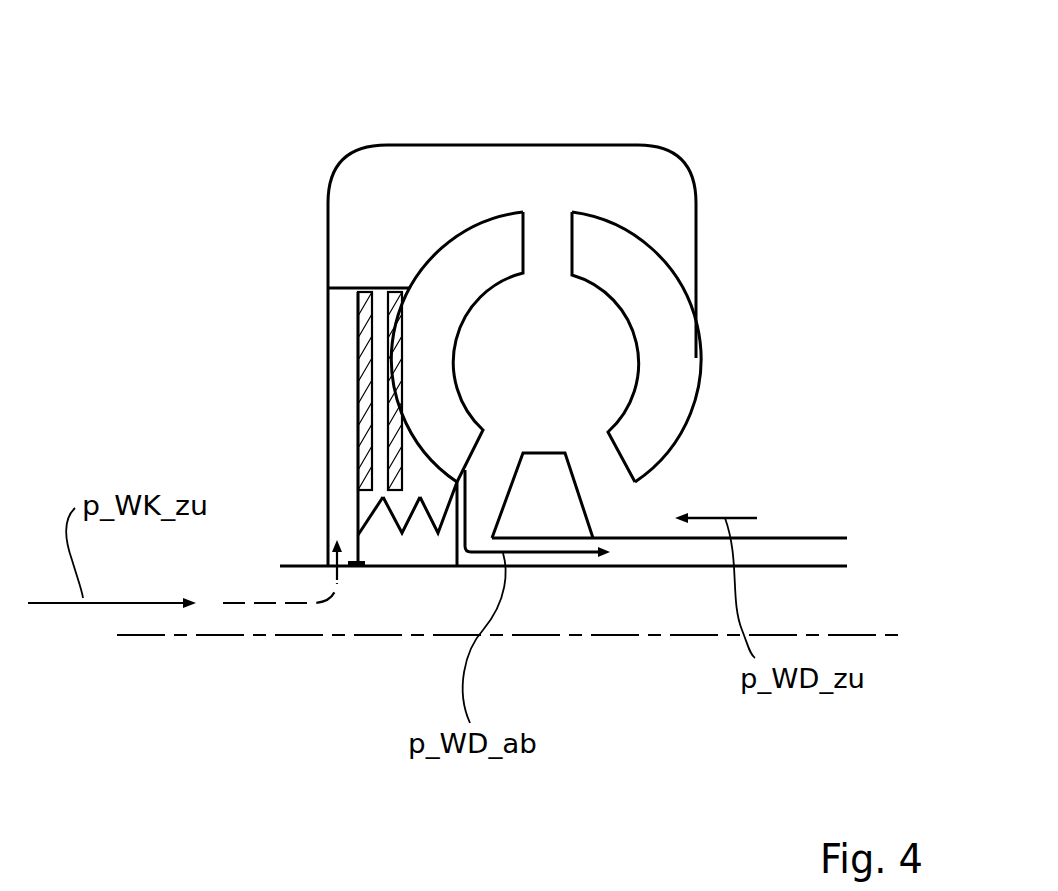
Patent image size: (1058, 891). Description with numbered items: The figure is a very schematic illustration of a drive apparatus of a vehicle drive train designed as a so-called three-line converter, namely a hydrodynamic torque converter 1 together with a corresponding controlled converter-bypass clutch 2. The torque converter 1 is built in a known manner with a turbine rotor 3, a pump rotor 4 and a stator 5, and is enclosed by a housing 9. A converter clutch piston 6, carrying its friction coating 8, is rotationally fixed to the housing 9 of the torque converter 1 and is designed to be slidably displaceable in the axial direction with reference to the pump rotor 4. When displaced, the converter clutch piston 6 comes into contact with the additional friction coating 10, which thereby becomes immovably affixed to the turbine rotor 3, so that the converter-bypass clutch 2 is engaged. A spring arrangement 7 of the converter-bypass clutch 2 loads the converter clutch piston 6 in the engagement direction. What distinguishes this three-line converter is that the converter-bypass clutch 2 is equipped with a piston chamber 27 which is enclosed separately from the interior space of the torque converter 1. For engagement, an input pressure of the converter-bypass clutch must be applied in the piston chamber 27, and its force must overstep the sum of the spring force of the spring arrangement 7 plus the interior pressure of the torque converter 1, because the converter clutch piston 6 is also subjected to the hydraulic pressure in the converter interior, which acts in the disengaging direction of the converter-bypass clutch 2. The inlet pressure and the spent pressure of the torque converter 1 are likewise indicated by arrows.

The hydrodynamic torque converter 1 is at (555, 309).
The converter-bypass clutch 2 is at (272, 364).
The turbine rotor 3 is at (448, 280).
The pump rotor 4 is at (622, 267).
The stator 5 is at (553, 505).
The converter clutch piston 6 is at (386, 512).
The spring arrangement 7 is at (372, 515).
The friction coating 8 is at (367, 307).
The housing 9 is at (327, 268).
The additional friction coating 10 is at (425, 500).
The piston chamber 27 is at (347, 332).